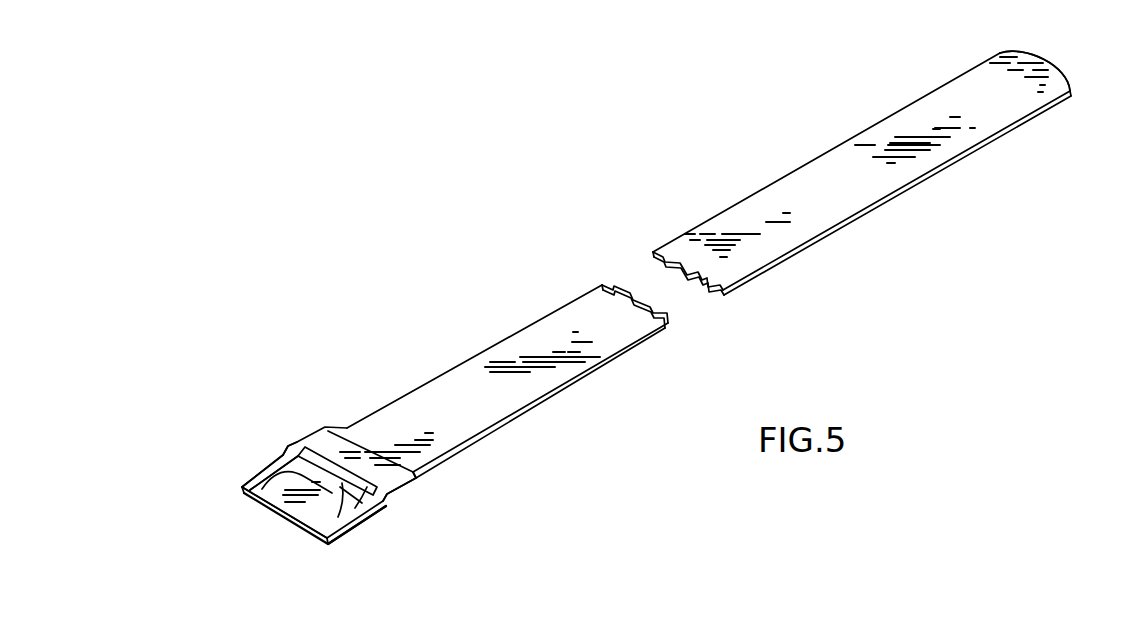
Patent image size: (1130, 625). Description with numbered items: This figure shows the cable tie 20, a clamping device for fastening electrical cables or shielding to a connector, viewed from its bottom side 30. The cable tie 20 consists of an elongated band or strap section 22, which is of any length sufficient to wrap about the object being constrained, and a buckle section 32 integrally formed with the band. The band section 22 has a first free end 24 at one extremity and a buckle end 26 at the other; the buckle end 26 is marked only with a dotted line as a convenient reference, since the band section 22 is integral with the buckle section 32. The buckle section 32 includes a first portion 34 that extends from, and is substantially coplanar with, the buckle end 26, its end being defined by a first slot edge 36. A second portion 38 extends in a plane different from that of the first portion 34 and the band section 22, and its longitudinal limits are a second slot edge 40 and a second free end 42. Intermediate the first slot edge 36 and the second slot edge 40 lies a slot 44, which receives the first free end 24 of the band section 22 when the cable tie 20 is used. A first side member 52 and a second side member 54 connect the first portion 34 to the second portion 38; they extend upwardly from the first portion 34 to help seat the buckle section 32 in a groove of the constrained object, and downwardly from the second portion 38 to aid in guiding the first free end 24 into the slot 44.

The cable tie 20 is at (520, 142).
The band or strap section 22 is at (672, 244).
The first free end 24 is at (1028, 78).
The buckle end 26 is at (370, 437).
The bottom side 30 is at (837, 202).
The buckle section 32 is at (252, 360).
The first portion 34 is at (395, 453).
The first slot edge 36 is at (357, 498).
The second portion 38 is at (333, 532).
The second slot edge 40 is at (265, 492).
The second free end 42 is at (303, 525).
The slot 44 is at (313, 513).
The first side member 52 is at (388, 497).
The second side member 54 is at (283, 453).